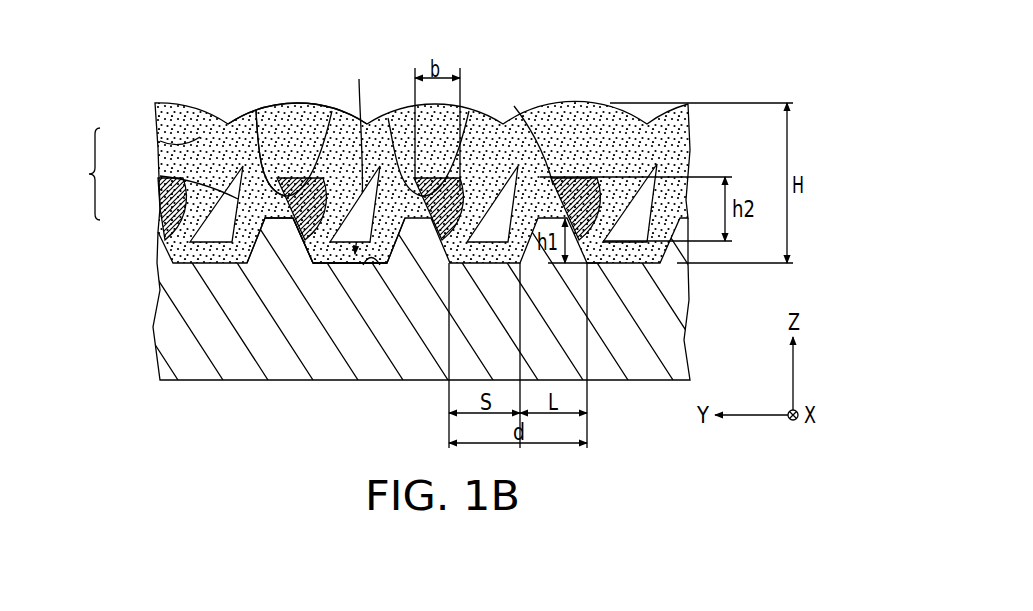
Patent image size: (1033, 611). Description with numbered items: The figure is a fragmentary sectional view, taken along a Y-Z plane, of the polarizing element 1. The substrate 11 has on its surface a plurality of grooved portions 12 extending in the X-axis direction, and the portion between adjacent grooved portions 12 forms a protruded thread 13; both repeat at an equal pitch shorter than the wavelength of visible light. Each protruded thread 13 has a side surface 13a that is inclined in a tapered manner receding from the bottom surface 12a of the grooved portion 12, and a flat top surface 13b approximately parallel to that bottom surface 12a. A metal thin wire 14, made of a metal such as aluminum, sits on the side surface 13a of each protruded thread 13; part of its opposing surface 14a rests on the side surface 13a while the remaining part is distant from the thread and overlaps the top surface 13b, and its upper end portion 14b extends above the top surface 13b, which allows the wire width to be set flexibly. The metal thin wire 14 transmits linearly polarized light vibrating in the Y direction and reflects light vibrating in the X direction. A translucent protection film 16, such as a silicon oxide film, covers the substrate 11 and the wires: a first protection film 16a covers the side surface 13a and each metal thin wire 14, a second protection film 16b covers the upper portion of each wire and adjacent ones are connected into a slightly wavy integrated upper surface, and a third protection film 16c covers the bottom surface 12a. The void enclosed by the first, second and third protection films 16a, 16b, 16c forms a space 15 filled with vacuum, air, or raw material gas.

The polarizing element 1 is at (621, 91).
The substrate 11 is at (690, 318).
The grooved portion 12 is at (388, 118).
The bottom surface 12a is at (387, 265).
The protruded thread 13 is at (277, 255).
The side surface 13a is at (337, 250).
The top surface 13b is at (525, 134).
The metal thin wire 14 is at (332, 111).
The opposing surface 14a is at (256, 112).
The upper end portion 14b is at (295, 106).
The space 15 is at (357, 155).
The protection film 16 is at (82, 174).
The first protection film 16a is at (160, 176).
The second protection film 16b is at (160, 141).
The third protection film 16c is at (172, 215).